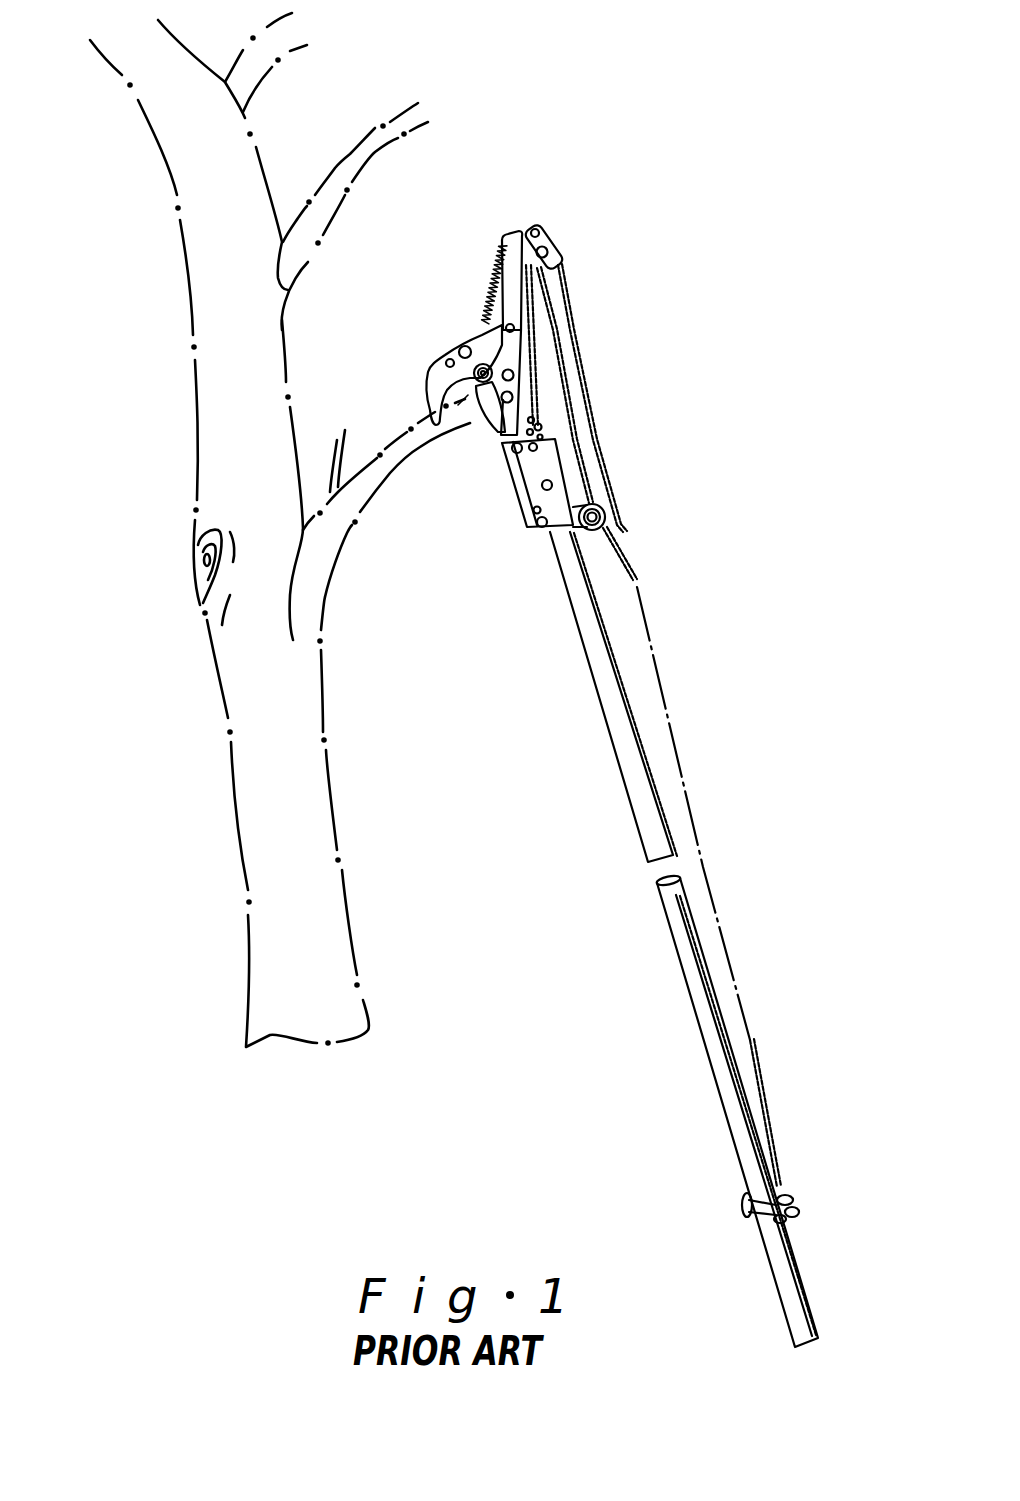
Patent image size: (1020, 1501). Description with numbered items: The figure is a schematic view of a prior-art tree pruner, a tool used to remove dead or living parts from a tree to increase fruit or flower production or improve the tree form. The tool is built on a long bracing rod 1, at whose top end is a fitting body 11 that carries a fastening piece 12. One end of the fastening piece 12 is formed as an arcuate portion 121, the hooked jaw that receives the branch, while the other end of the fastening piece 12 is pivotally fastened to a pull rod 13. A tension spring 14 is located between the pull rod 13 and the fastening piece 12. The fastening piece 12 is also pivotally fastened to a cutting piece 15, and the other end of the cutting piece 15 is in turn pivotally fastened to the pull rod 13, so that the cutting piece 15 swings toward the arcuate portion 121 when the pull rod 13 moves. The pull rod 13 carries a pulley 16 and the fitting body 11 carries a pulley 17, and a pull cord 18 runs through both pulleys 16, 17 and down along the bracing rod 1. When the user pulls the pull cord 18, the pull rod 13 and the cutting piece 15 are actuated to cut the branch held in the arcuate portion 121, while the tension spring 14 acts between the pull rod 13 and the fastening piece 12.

The bracing rod 1 is at (588, 620).
The fitting body 11 is at (527, 487).
The fastening piece 12 is at (517, 412).
The arcuate portion 121 is at (427, 400).
The pull rod 13 is at (517, 235).
The tension spring 14 is at (490, 287).
The cutting piece 15 is at (483, 408).
The pulley 16 is at (553, 255).
The pulley 17 is at (606, 520).
The pull cord 18 is at (598, 422).